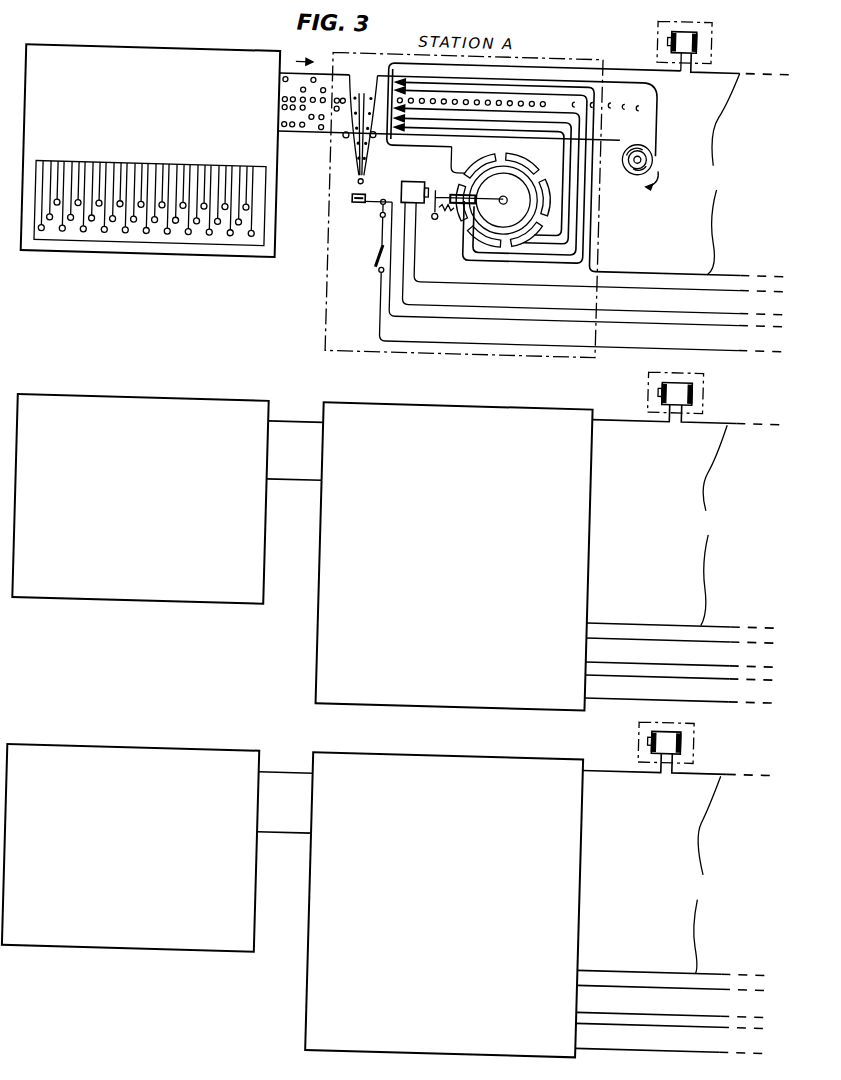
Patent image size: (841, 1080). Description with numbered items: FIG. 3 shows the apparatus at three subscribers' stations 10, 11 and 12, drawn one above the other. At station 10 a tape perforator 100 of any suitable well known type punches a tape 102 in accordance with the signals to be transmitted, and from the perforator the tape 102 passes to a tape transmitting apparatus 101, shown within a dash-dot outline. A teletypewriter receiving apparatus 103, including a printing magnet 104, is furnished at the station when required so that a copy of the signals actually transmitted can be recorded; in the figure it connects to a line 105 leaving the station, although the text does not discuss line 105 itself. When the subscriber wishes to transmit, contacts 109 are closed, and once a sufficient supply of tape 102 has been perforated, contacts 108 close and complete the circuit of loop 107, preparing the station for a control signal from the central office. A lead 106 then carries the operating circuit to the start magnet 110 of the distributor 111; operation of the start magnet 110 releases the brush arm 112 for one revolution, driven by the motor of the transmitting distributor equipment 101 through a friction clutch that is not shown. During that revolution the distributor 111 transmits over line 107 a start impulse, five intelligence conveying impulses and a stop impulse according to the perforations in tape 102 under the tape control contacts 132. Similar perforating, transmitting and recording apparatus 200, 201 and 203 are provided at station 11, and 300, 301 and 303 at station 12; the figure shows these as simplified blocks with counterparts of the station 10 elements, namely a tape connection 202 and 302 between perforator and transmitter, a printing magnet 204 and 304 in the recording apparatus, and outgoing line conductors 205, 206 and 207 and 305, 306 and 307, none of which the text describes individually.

The subscriber's station 10 is at (150, 160).
The subscriber's station 11 is at (140, 510).
The subscriber's station 12 is at (131, 853).
The tape perforator 100 is at (203, 57).
The tape transmitting apparatus 101 is at (543, 62).
The tape 102 is at (297, 133).
The teletypewriter receiving apparatus 103 is at (645, 31).
The printing magnet 104 is at (683, 38).
The line conductor 105 is at (734, 165).
The lead 106 is at (716, 305).
The loop 107 is at (716, 342).
The contacts 108 is at (361, 207).
The contacts 109 is at (369, 254).
The start magnet 110 is at (404, 218).
The distributor 111 is at (509, 220).
The brush arm 112 is at (453, 236).
The tape control contacts 132 is at (412, 126).
The perforating apparatus 200 is at (216, 408).
The transmitting apparatus 201 is at (531, 412).
The tape connection 202 is at (296, 486).
The recording apparatus 203 is at (644, 380).
The relay 204 is at (686, 388).
The line conductor 205 is at (729, 516).
The line conductor 206 is at (714, 657).
The line conductor 207 is at (715, 693).
The perforating apparatus 300 is at (201, 758).
The transmitting apparatus 301 is at (562, 762).
The tape connection 302 is at (297, 839).
The recording apparatus 303 is at (646, 729).
The relay 304 is at (686, 737).
The line conductor 305 is at (721, 865).
The line conductor 306 is at (729, 1007).
The line conductor 307 is at (730, 1043).